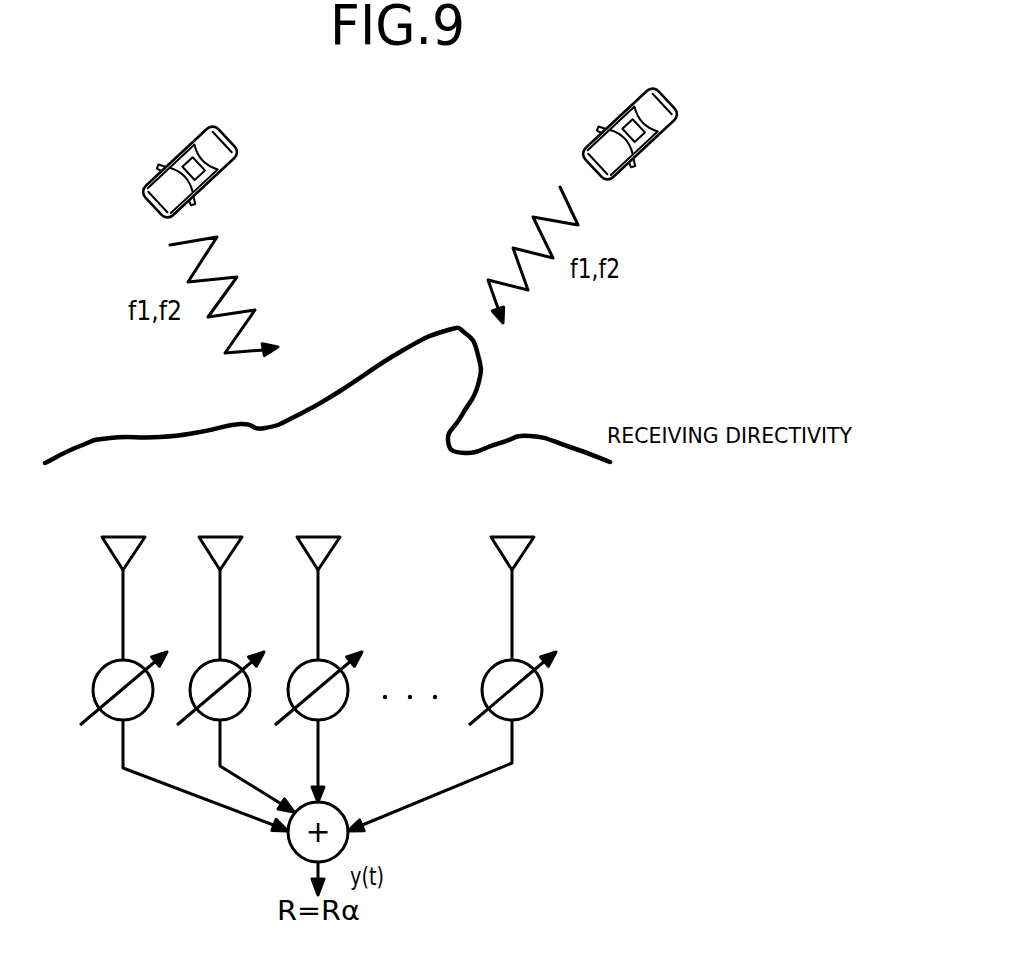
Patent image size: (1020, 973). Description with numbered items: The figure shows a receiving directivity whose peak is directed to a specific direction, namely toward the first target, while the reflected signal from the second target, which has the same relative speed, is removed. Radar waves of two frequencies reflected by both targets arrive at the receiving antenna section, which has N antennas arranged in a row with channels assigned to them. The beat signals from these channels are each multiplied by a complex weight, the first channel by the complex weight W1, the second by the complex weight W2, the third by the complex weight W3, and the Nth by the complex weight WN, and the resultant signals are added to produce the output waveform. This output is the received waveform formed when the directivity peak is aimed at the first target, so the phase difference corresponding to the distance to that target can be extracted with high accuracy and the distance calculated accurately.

The complex weight W1 is at (184, 666).
The complex weight W2 is at (235, 656).
The complex weight W3 is at (318, 651).
The complex weight WN is at (452, 666).